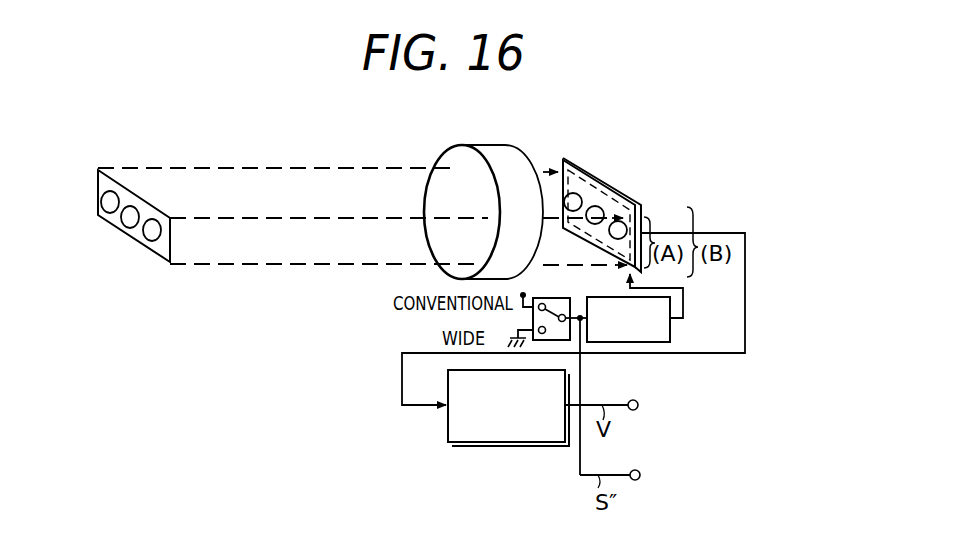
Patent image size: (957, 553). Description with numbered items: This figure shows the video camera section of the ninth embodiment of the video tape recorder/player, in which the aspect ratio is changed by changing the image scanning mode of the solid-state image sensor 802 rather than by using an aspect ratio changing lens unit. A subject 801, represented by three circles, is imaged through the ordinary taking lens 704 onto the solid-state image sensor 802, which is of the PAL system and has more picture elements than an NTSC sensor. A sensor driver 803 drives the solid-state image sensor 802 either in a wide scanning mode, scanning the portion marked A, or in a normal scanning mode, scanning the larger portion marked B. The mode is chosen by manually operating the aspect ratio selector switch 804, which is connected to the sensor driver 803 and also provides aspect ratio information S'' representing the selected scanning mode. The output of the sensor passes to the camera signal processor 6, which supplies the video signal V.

The object with three circular marks 801 is at (138, 245).
The taking lens 704 is at (503, 147).
The solid-state image sensor 802 is at (600, 178).
The sensor driver 803 is at (670, 332).
The aspect ratio selector switch 804 is at (553, 297).
The camera signal processor 6 is at (465, 446).